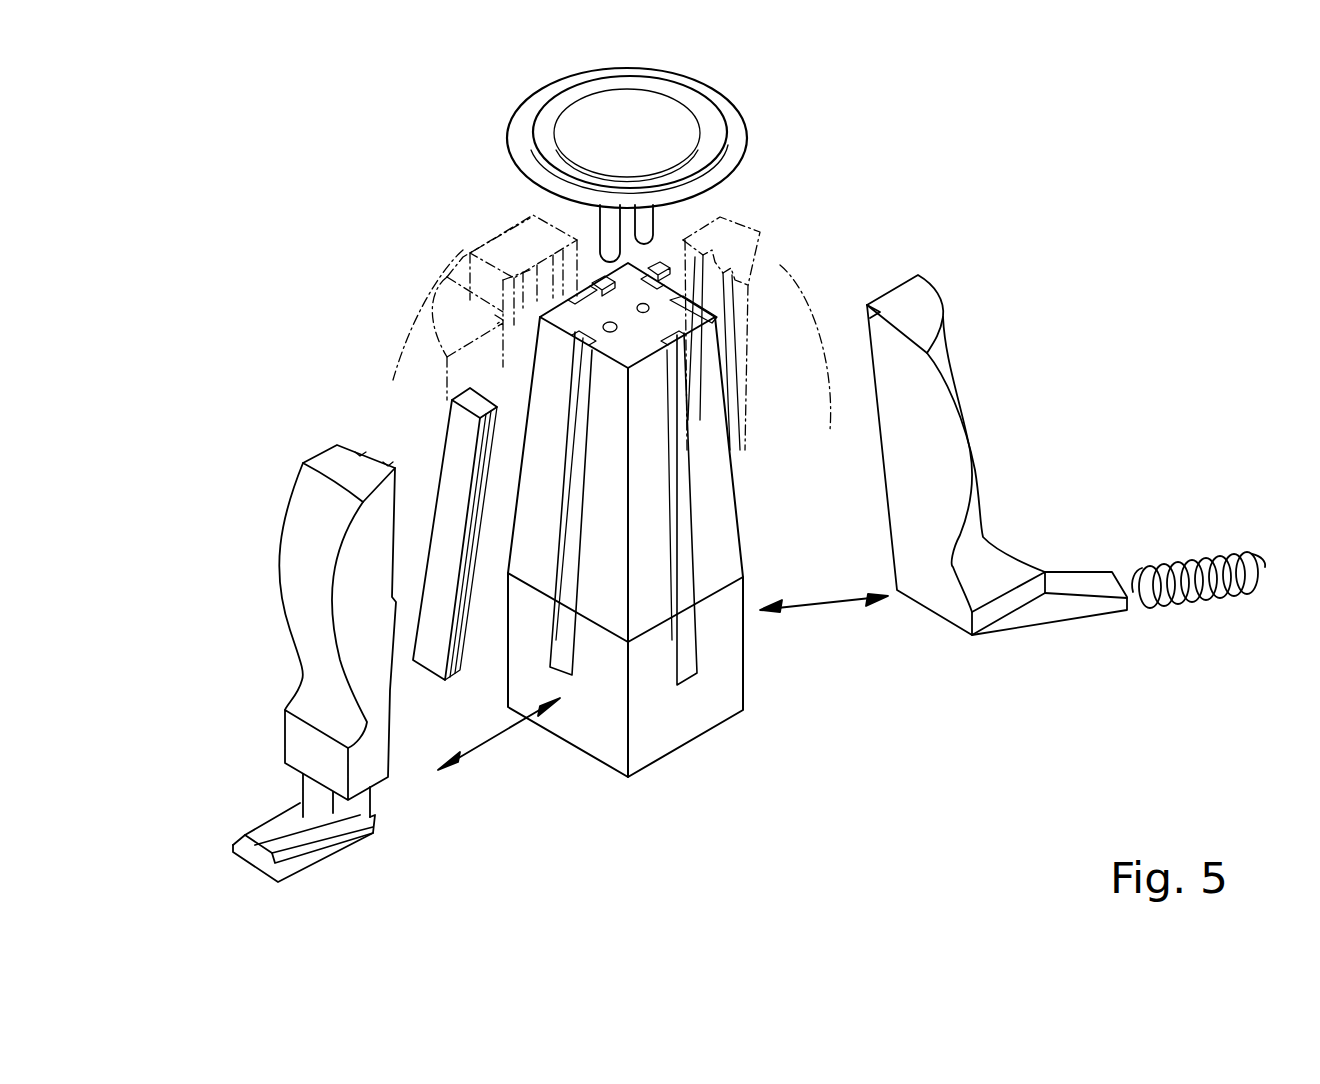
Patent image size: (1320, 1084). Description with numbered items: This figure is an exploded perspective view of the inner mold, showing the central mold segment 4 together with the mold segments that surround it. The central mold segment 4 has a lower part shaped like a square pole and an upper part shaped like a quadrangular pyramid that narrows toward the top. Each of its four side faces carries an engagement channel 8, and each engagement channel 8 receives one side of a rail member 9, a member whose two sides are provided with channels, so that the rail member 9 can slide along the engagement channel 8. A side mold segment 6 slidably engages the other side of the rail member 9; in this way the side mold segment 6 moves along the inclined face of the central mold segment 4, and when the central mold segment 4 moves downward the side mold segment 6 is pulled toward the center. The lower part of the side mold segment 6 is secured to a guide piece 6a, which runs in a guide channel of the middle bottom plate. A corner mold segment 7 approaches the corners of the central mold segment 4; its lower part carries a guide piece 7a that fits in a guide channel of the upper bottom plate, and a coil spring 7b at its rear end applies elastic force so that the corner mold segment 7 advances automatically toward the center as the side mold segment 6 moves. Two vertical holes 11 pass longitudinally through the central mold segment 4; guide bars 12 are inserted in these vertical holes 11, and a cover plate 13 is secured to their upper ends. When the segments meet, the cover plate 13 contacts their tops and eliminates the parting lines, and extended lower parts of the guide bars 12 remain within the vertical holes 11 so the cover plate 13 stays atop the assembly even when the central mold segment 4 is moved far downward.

The central mold segment 4 is at (690, 725).
The side mold segment 6 is at (310, 535).
The guide piece 6a is at (310, 838).
The corner mold segment 7 is at (943, 403).
The guide piece 7a is at (1093, 605).
The coil spring 7b is at (1233, 600).
The engagement channel 8 is at (683, 593).
The rail member 9 is at (452, 413).
The vertical hole 11 is at (670, 317).
The guide bar 12 is at (643, 232).
The cover plate 13 is at (680, 122).